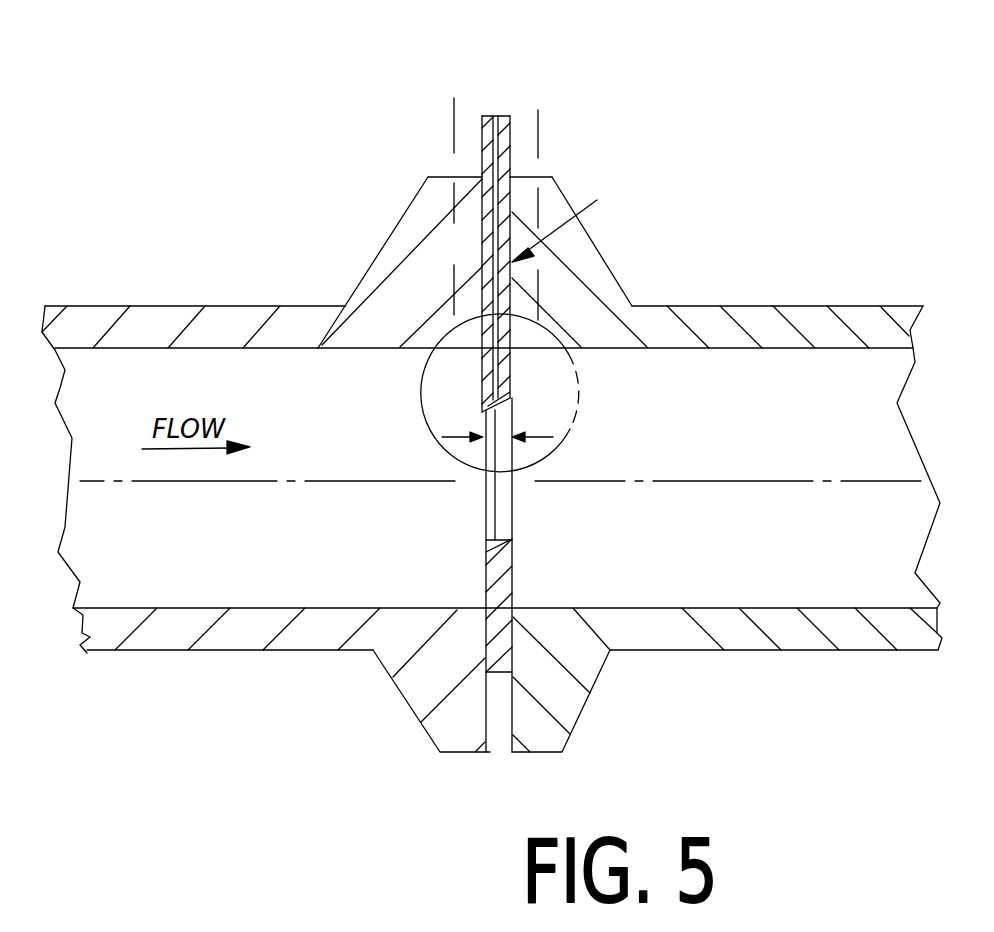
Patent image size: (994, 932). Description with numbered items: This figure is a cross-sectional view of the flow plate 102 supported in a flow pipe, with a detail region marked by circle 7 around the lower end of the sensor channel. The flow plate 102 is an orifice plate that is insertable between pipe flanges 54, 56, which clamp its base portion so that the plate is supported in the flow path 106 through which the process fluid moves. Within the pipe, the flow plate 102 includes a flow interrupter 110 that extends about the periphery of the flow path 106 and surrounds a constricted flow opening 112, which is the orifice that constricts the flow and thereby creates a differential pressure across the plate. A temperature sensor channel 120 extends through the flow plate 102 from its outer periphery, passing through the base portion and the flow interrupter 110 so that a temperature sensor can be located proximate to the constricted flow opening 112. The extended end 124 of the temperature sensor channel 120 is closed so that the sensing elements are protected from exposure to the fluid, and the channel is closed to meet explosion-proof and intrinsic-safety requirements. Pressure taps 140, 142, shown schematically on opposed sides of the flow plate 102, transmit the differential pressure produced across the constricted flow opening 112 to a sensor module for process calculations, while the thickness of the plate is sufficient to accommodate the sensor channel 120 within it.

The detail circle (FIG. 7 region) 7 is at (548, 333).
The pipe flange 54 is at (402, 223).
The pipe flange 56 is at (557, 178).
The flow plate 102 is at (577, 215).
The flow path 106 is at (745, 306).
The flow interrupter 110 is at (513, 377).
The constricted flow opening 112 is at (512, 494).
The temperature sensor channel 120 is at (503, 116).
The extended end 124 is at (513, 398).
The pressure tap 140 is at (454, 118).
The pressure tap 142 is at (538, 127).